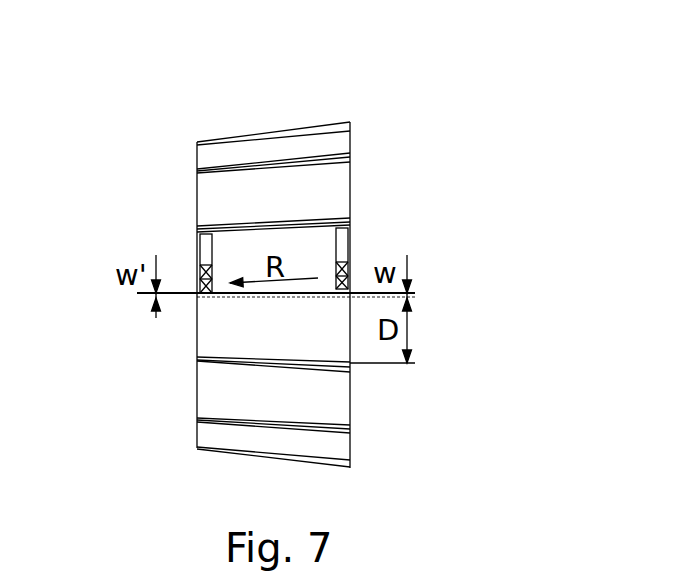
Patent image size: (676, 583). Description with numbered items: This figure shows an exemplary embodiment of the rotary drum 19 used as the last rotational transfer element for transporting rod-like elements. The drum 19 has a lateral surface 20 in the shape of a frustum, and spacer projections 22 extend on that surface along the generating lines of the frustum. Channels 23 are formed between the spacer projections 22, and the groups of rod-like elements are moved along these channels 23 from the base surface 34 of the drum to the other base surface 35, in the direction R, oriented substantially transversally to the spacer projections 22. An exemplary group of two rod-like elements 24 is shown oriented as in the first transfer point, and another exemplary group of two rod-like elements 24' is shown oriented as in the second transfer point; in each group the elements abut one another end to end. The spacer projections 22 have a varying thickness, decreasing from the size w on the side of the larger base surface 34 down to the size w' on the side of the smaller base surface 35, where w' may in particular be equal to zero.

The rotary drum 19 is at (310, 117).
The lateral surface 20 is at (258, 143).
The spacer projections 22 is at (223, 425).
The channels 23 is at (327, 386).
The group of rod-like elements 24 is at (418, 232).
The group of rod-like elements 24' is at (133, 234).
The base surface 34 is at (365, 151).
The base surface 35 is at (182, 157).